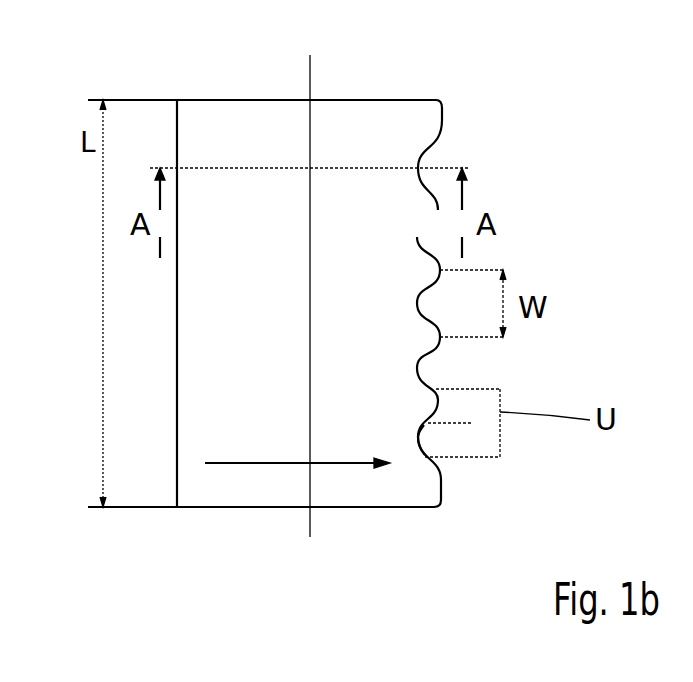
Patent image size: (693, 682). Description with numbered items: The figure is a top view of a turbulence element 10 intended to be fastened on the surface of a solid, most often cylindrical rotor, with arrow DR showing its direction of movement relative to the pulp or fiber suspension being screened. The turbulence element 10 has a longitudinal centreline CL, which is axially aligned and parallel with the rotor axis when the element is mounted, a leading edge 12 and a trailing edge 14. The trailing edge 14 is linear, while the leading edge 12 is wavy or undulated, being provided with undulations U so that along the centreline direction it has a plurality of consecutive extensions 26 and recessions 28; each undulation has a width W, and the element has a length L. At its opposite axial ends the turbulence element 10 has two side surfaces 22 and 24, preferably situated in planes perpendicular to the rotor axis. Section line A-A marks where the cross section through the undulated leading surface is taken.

The turbulence element 10 is at (356, 336).
The leading edge 12 is at (440, 480).
The trailing edge 14 is at (175, 418).
The side surface 22 is at (358, 98).
The side surface 24 is at (278, 510).
The extension 26 is at (448, 390).
The recession 28 is at (419, 440).